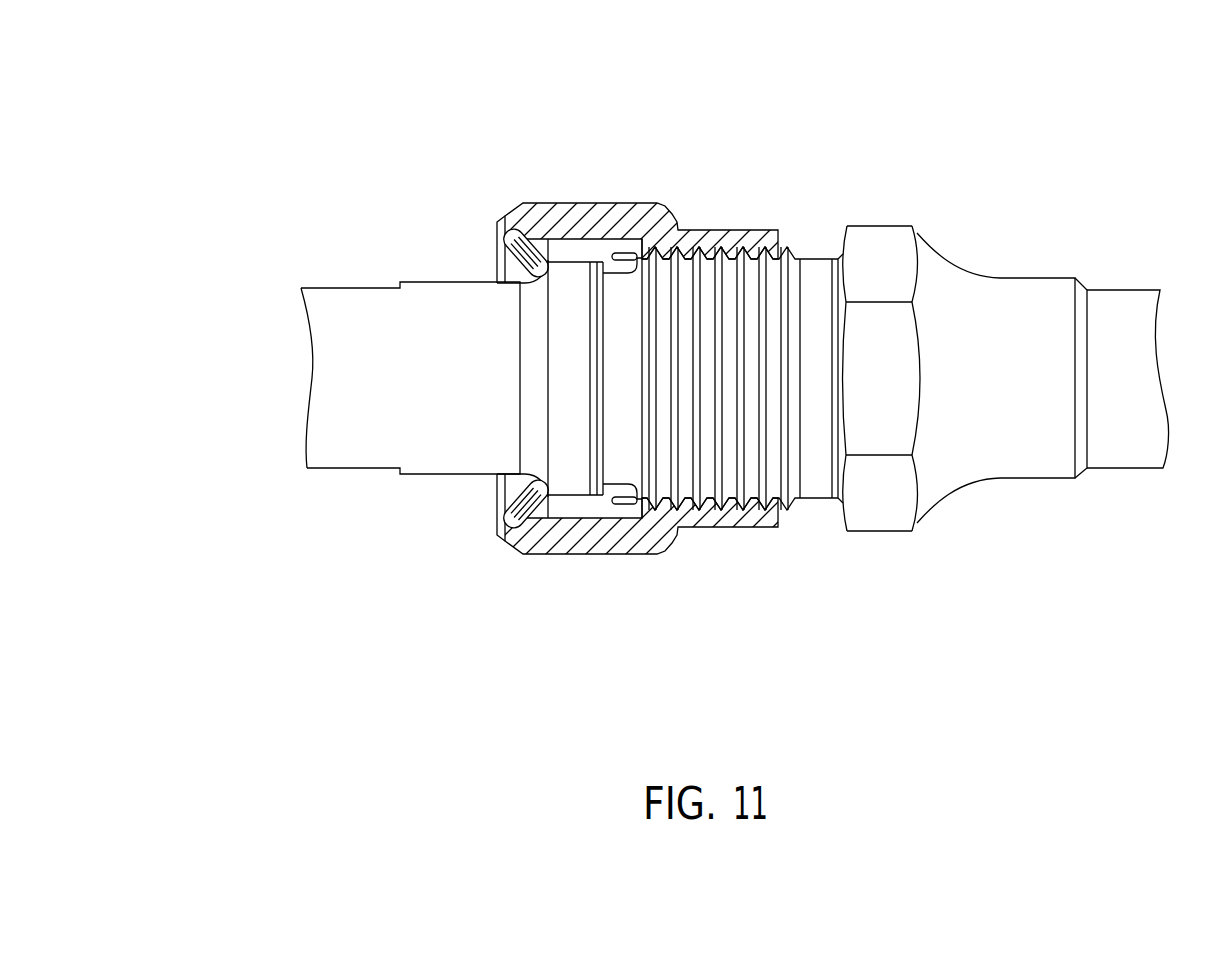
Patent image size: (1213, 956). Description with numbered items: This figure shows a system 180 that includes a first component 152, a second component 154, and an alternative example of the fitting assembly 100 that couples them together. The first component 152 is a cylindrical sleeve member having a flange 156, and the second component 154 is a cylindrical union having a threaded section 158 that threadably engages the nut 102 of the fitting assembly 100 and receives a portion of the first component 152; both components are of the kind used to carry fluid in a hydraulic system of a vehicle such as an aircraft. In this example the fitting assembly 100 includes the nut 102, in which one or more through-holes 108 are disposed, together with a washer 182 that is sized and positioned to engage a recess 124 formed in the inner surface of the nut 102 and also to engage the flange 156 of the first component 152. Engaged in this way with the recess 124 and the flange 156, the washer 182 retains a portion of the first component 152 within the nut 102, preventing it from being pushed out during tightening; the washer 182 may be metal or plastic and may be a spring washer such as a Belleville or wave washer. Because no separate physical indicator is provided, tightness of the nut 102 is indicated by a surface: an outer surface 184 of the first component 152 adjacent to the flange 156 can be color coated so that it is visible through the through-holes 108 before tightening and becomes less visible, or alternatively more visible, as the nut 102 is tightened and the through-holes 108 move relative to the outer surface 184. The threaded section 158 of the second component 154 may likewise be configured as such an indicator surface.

The fitting assembly 100 is at (458, 134).
The nut 102 is at (552, 542).
The through-holes 108 is at (622, 253).
The recess 124 is at (516, 240).
The first component 152 is at (450, 302).
The second component 154 is at (1017, 298).
The flange 156 is at (573, 287).
The threaded section 158 is at (810, 548).
The system 180 is at (225, 173).
The washer 182 is at (518, 250).
The outer surface 184 is at (623, 285).